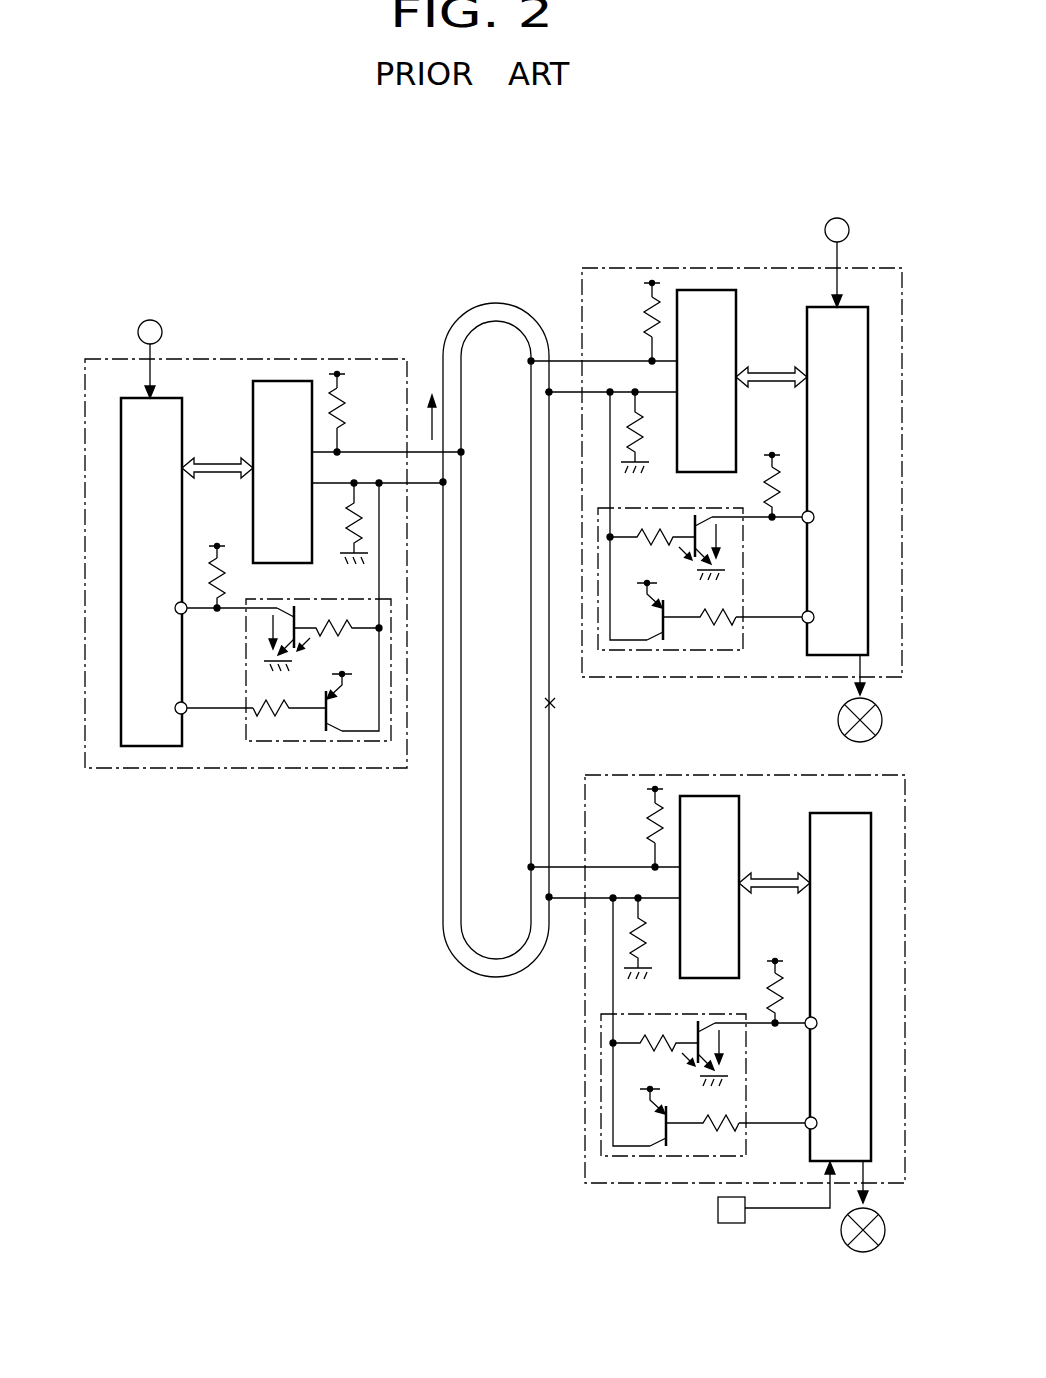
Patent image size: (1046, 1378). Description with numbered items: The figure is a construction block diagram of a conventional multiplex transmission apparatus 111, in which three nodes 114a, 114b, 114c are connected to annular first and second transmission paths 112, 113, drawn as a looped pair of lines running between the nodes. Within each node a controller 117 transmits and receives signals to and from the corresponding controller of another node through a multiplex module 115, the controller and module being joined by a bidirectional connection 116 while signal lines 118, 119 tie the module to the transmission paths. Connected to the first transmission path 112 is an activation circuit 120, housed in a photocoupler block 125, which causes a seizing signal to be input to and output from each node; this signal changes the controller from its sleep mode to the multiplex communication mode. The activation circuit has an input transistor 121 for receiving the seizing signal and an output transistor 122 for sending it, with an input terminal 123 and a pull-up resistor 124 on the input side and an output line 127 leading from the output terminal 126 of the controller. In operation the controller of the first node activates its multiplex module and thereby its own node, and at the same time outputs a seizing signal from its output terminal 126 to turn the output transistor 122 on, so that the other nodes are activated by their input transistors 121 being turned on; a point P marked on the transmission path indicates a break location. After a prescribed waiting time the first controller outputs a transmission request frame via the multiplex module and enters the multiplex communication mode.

The optical communication system (prior art) 111 is at (551, 226).
The first transmission path 112 is at (455, 320).
The second transmission path 113 is at (461, 866).
The node 114a is at (273, 358).
The node 114b is at (703, 266).
The node 114c is at (587, 1050).
The multiplex module 115 is at (252, 408).
The controller 116 is at (213, 478).
The controller 117 is at (183, 456).
The signal line 118 is at (425, 483).
The signal line 119 is at (372, 452).
The activation circuit 120 is at (258, 744).
The input transistor 121 is at (302, 612).
The output transistor 122 is at (336, 738).
The input terminal 123 is at (190, 613).
The pull-up resistor 124 is at (234, 609).
The photocoupler 125 is at (394, 736).
The output terminal 126 is at (190, 709).
The output line 127 is at (219, 714).
The break point P is at (554, 708).